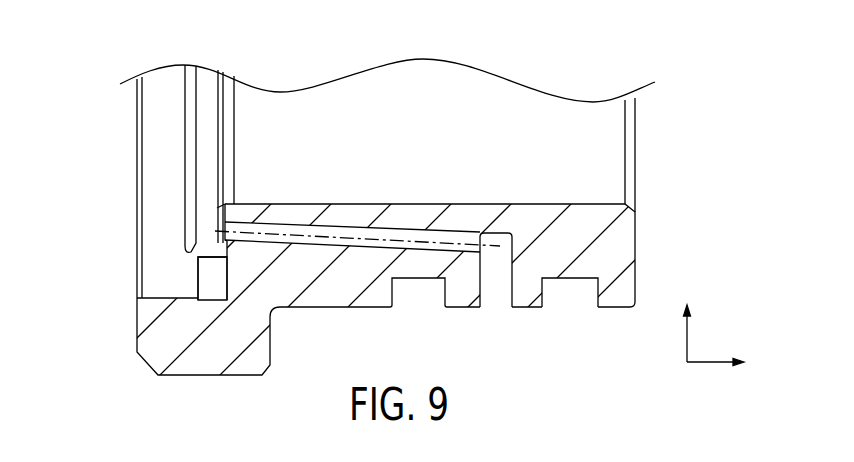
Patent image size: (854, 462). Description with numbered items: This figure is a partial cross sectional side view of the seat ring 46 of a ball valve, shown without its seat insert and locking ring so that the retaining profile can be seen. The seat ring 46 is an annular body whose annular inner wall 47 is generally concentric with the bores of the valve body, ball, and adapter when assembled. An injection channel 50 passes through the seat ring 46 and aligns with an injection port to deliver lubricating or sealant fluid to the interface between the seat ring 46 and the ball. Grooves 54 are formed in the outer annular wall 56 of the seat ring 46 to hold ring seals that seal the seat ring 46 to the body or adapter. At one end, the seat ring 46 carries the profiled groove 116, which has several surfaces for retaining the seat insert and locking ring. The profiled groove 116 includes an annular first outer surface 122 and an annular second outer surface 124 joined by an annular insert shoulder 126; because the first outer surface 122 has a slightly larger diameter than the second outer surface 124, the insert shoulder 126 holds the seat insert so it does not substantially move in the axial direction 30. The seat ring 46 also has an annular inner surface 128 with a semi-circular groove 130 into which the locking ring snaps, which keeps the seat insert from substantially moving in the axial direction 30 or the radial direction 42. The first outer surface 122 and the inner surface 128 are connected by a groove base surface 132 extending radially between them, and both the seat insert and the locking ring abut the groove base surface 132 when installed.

The seat ring 46 is at (97, 119).
The annular inner wall 47 is at (477, 204).
The injection channel 50 is at (400, 235).
The grooves 54 is at (573, 288).
The outer annular wall 56 is at (388, 307).
The profiled groove 116 is at (213, 287).
The first outer surface 122 is at (213, 298).
The second outer surface 124 is at (152, 302).
The insert shoulder 126 is at (195, 300).
The inner surface 128 is at (217, 257).
The semi-circular groove 130 is at (190, 252).
The groove base surface 132 is at (228, 268).
The radial direction 42 is at (685, 340).
The axial direction 30 is at (707, 363).